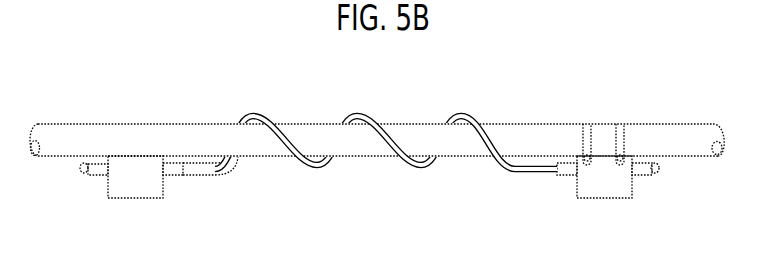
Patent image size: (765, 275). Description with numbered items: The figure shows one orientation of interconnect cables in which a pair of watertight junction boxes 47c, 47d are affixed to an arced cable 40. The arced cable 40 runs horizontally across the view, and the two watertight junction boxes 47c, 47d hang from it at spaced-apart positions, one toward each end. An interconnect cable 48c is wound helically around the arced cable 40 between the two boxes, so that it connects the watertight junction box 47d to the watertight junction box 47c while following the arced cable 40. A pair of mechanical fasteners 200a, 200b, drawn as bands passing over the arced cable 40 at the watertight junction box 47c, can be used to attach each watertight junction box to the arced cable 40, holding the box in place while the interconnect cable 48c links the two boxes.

The arced cable 40 is at (155, 123).
The interconnect cable 48c is at (366, 114).
The watertight junction box 47d is at (137, 199).
The watertight junction box 47c is at (605, 200).
The mechanical fastener 200a is at (583, 125).
The mechanical fastener 200b is at (627, 124).